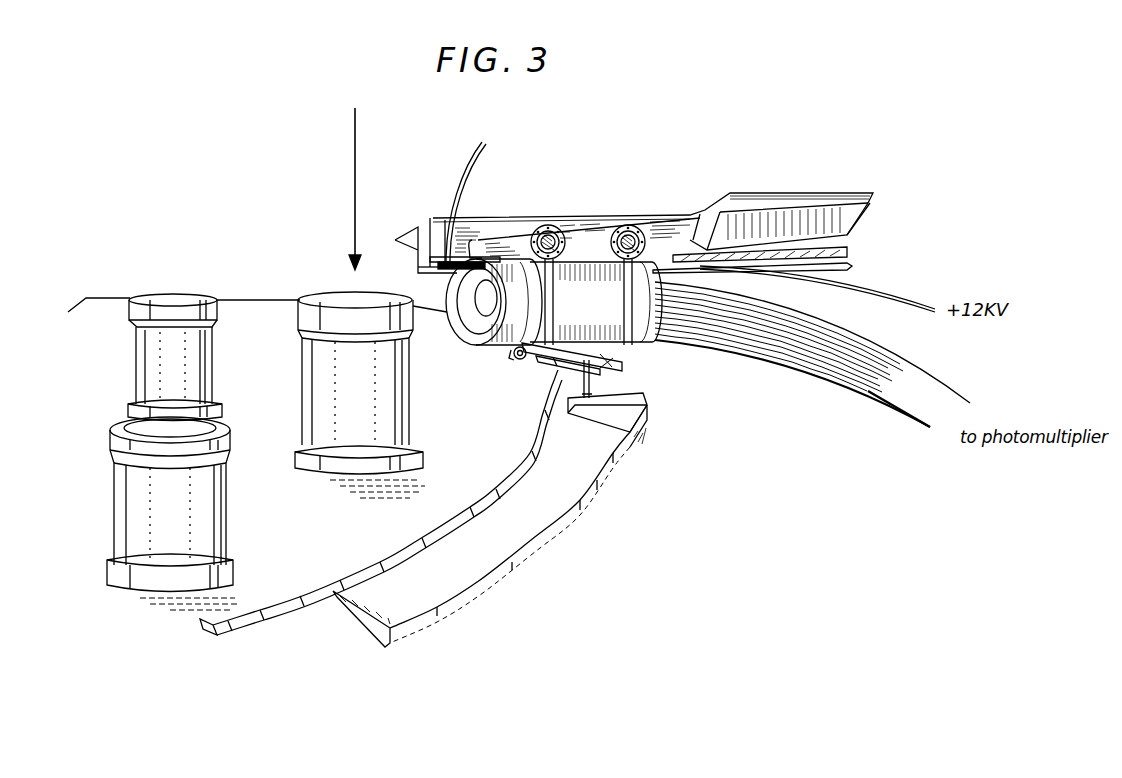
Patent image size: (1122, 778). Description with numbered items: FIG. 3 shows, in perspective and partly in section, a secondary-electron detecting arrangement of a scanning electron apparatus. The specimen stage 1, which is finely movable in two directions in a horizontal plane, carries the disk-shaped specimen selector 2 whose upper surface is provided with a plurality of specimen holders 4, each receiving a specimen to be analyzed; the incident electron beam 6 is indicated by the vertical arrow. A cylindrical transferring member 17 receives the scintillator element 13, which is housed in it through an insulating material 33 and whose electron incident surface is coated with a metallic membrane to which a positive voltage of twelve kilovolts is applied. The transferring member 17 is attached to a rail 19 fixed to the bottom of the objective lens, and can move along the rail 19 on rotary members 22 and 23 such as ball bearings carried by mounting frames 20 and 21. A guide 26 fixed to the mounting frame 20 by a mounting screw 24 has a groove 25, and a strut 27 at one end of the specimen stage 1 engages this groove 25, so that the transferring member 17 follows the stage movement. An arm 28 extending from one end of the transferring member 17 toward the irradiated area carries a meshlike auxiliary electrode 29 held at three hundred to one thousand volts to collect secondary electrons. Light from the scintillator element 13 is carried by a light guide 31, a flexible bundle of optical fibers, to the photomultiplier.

The specimen stage 1 is at (467, 578).
The disk-shaped specimen selector 2 is at (262, 600).
The specimen holders 4 is at (145, 384).
The incident beam 6 is at (350, 180).
The scintillator element 13 is at (491, 302).
The cylindrical transferring member 17 is at (653, 327).
The rail 19 is at (422, 228).
The mounting frame 20 is at (515, 360).
The mounting frame 21 is at (632, 345).
The rotary member 22 is at (551, 226).
The rotary member 23 is at (631, 226).
The mounting screw 24 is at (530, 356).
The groove 25 is at (550, 360).
The guide 26 is at (620, 371).
The strut 27 is at (577, 404).
The arm 28 is at (476, 245).
The meshlike auxiliary electrode 29 is at (432, 265).
The light guide 31 is at (872, 393).
The insulating material 33 is at (465, 300).